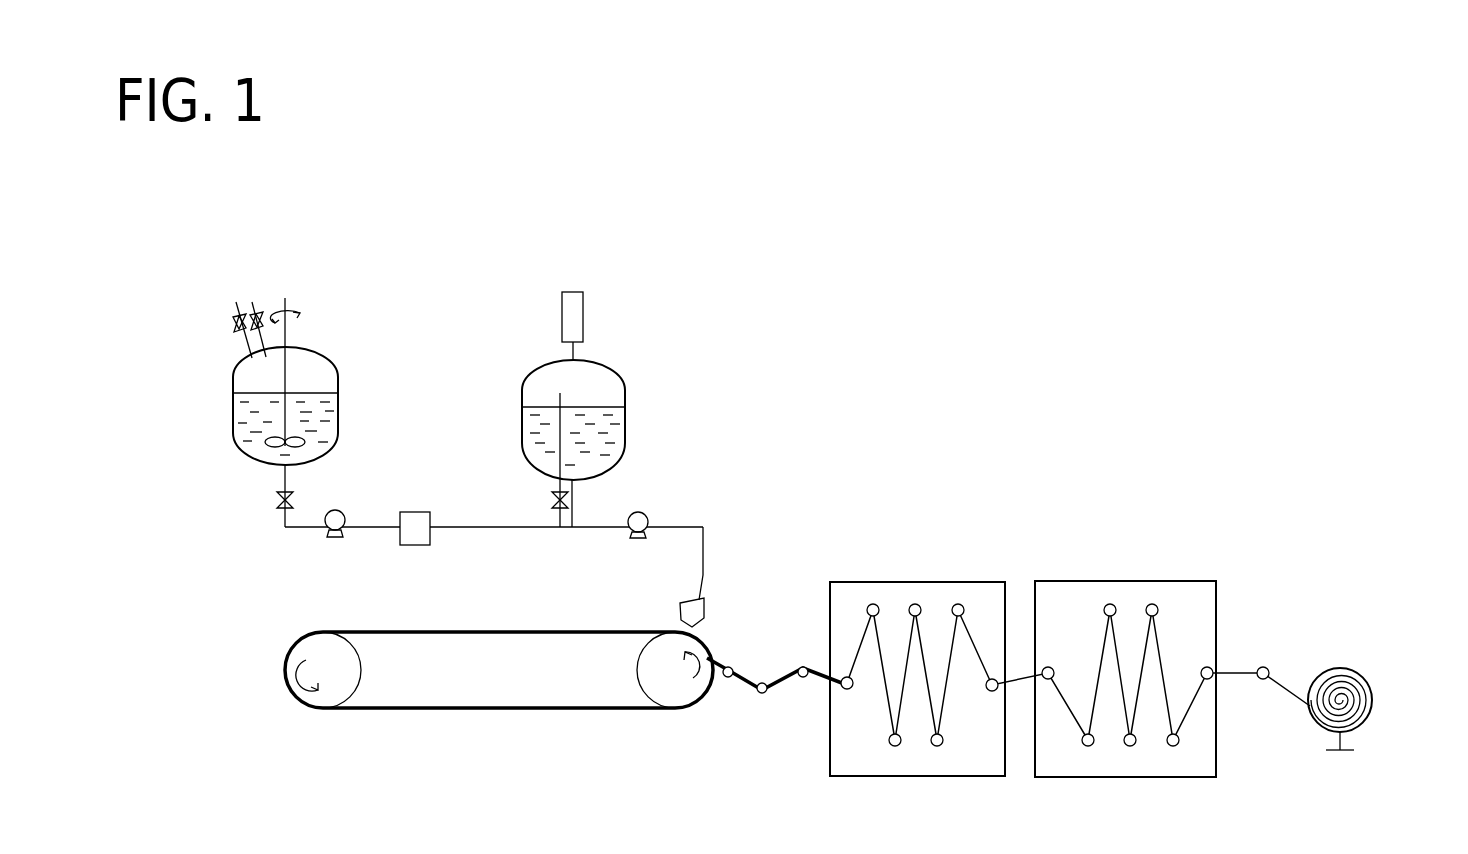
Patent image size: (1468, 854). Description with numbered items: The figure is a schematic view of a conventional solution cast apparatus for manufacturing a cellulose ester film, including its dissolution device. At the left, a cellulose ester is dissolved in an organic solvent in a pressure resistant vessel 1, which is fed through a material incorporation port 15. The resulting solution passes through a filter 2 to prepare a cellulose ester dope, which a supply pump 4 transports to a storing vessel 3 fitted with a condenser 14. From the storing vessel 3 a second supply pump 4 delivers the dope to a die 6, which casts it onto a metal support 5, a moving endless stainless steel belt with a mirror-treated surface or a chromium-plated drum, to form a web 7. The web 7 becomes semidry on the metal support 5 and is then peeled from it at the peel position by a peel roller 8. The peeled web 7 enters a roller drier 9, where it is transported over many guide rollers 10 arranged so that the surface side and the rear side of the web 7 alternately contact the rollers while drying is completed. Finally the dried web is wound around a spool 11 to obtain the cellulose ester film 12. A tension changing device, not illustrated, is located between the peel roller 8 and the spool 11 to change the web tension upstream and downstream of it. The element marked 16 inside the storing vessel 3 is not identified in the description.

The pressure resistant vessel 1 is at (338, 378).
The filter 2 is at (414, 511).
The storing vessel 3 is at (625, 412).
The supply pump 4 is at (343, 510).
The metal support 5 is at (712, 656).
The die 6 is at (705, 613).
The web 7 is at (763, 695).
The peel roller 8 is at (727, 680).
The roller drier 9 is at (873, 581).
The guide rollers 10 is at (937, 748).
The spool 11 is at (1372, 700).
The cellulose ester film 12 is at (1290, 672).
The condenser 14 is at (583, 314).
The material incorporation port 15 is at (252, 300).
The level sensor 16 is at (556, 451).